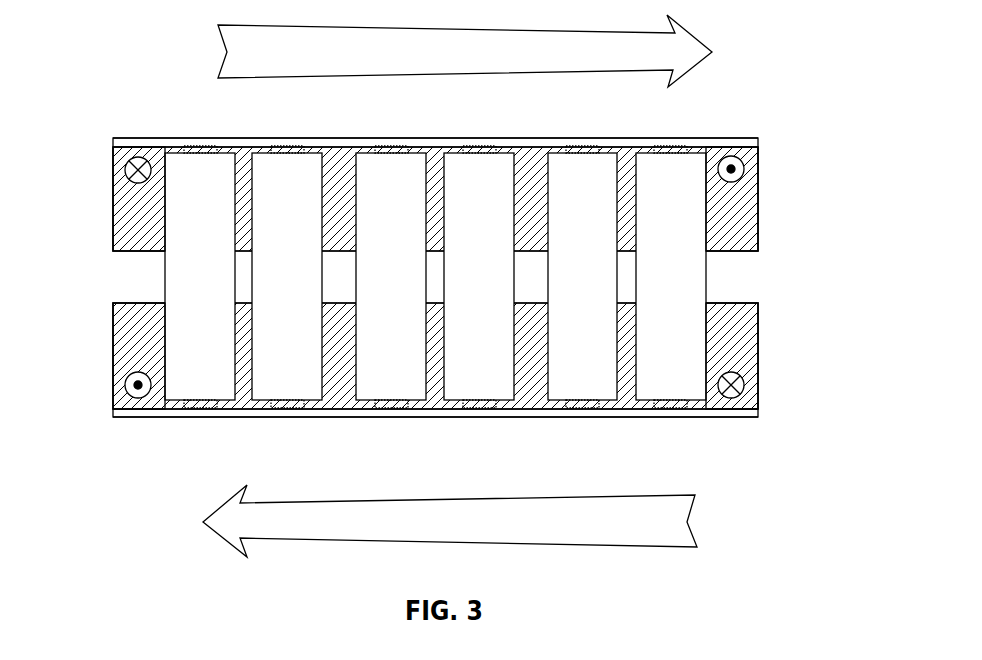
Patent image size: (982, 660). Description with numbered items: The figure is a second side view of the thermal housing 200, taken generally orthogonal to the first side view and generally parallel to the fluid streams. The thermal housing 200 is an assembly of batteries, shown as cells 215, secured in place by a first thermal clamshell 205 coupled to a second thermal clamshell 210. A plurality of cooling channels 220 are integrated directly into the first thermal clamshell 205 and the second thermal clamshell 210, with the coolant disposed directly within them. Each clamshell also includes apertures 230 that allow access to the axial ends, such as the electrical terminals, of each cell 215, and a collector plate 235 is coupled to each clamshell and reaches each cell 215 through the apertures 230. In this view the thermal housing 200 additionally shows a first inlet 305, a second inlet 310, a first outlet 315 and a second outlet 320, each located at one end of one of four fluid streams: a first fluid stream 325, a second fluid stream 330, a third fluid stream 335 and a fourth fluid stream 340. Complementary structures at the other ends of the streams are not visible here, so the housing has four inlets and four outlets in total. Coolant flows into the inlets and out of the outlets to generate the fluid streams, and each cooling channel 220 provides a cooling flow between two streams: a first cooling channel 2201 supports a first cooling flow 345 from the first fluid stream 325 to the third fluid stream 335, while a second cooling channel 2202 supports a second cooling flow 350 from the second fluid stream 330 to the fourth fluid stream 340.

The thermal housing 200 is at (752, 66).
The first thermal clamshell 205 is at (758, 190).
The second thermal clamshell 210 is at (757, 372).
The cells 215 is at (183, 286).
The cooling channels 220 is at (435, 279).
The first cooling channel 2201 is at (435, 148).
The second cooling channel 2202 is at (435, 408).
The apertures 230 is at (288, 148).
The collector plate 235 is at (627, 137).
The first inlet 305 is at (131, 158).
The second inlet 310 is at (735, 397).
The first outlet 315 is at (738, 157).
The second outlet 320 is at (133, 397).
The first fluid stream 325 is at (112, 208).
The second fluid stream 330 is at (757, 325).
The third fluid stream 335 is at (758, 210).
The fourth fluid stream 340 is at (113, 350).
The first cooling flow 345 is at (465, 51).
The second cooling flow 350 is at (450, 521).